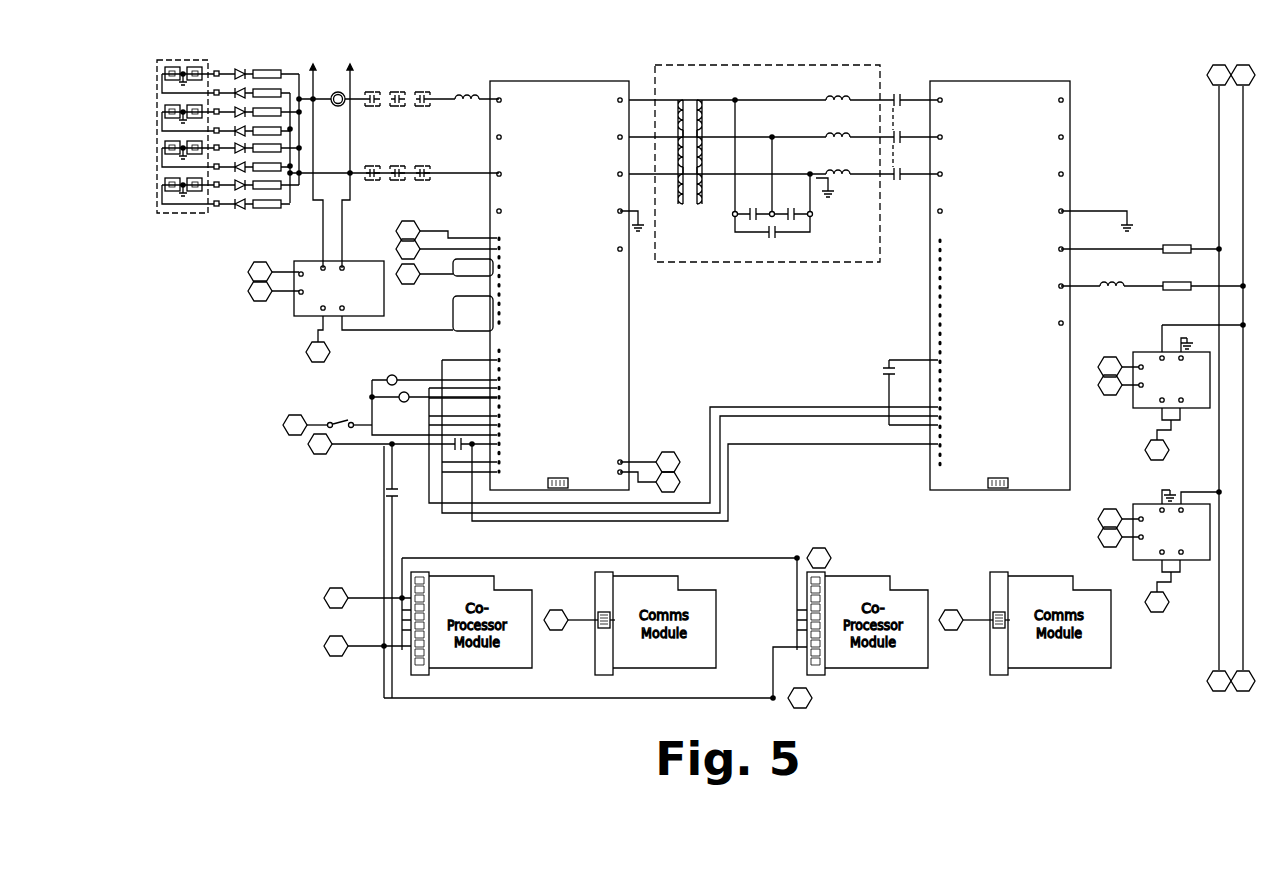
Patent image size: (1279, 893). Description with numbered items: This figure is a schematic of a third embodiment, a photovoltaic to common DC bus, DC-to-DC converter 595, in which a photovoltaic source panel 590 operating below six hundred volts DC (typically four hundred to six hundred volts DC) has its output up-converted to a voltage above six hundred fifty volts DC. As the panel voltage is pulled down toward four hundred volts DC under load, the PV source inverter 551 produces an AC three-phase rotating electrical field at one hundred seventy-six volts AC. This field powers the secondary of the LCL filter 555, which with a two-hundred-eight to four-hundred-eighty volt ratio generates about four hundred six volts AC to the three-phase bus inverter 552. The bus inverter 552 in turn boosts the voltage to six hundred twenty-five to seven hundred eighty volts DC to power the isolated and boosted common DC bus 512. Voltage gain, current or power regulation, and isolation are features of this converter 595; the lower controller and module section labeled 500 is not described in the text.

The controller / co-processor and comms modules 500 is at (275, 632).
The common DC bus 512 is at (1215, 165).
The PV source inverter 551 is at (585, 286).
The three-phase bus inverter 552 is at (1031, 285).
The LCL filter 555 is at (656, 44).
The photovoltaic source panel 590 is at (208, 214).
The photovoltaic to common DC bus, DC-to-DC converter 595 is at (452, 50).